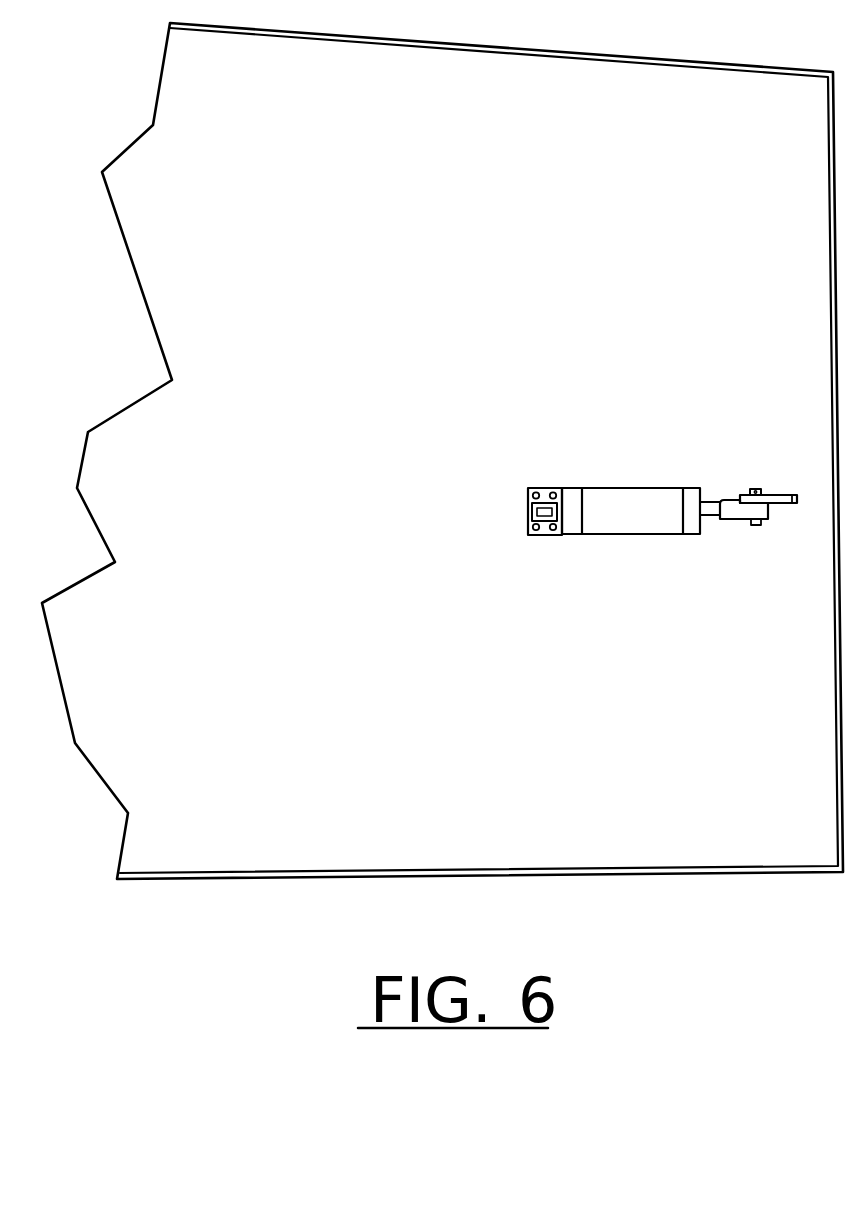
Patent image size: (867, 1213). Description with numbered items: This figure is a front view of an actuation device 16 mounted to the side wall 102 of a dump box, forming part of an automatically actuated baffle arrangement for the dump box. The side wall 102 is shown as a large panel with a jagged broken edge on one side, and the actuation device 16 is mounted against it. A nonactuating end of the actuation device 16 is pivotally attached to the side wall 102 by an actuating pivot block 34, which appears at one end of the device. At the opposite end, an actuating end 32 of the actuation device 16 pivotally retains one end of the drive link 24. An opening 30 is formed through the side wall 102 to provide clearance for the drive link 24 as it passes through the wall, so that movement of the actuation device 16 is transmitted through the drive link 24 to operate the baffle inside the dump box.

The side wall 102 is at (500, 239).
The actuation device 16 is at (650, 515).
The actuating pivot block 34 is at (540, 513).
The actuating end 32 is at (725, 519).
The drive link 24 is at (778, 504).
The opening 30 is at (790, 496).